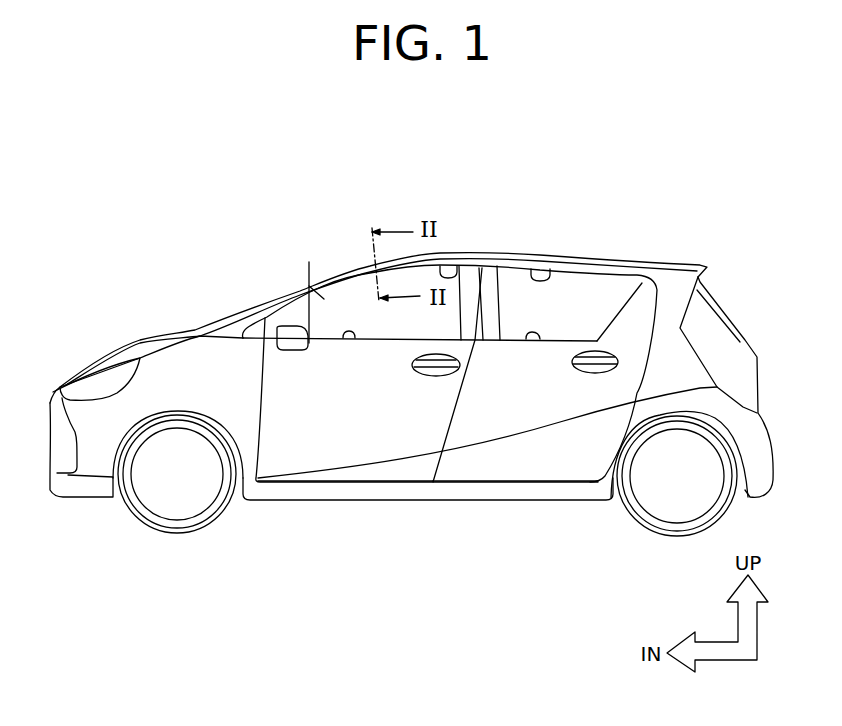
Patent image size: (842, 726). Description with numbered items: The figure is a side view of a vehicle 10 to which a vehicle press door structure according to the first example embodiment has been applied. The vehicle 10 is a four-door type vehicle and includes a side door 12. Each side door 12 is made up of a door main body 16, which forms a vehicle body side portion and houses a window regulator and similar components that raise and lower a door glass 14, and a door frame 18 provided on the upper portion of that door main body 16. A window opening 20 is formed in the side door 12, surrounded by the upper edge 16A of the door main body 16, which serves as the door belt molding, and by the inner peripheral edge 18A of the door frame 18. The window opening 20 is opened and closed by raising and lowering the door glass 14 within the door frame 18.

The vehicle 10 is at (521, 233).
The side door 12 is at (383, 428).
The door glass 14 is at (310, 262).
The door main body 16 is at (324, 442).
The upper edge (door belt molding) 16A is at (350, 340).
The door frame 18 is at (348, 271).
The inner peripheral edge 18A is at (450, 265).
The window opening 20 is at (390, 333).